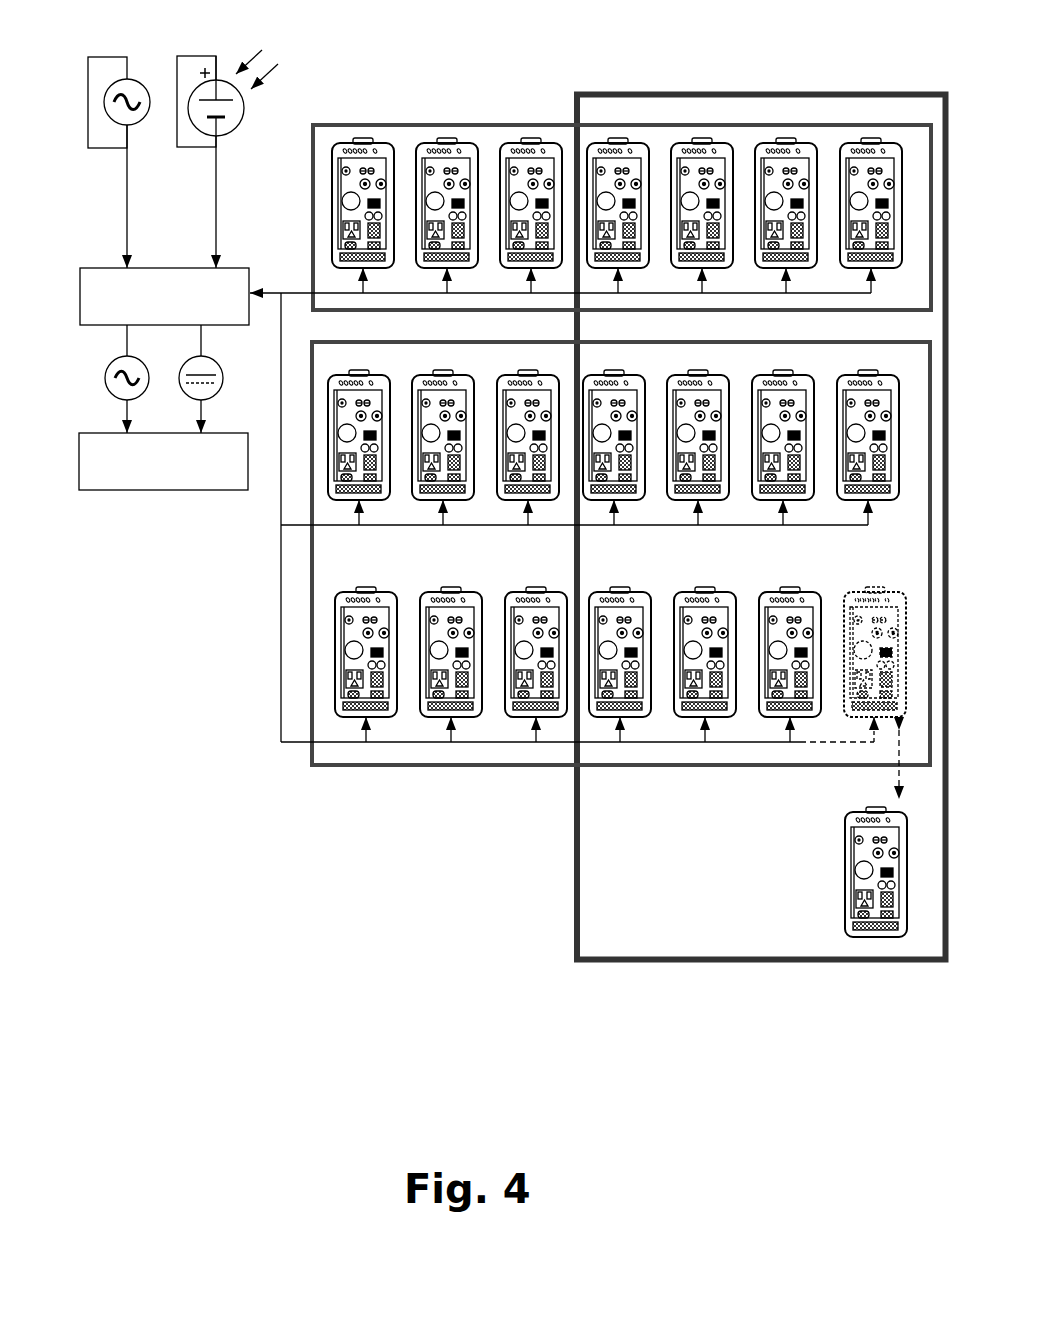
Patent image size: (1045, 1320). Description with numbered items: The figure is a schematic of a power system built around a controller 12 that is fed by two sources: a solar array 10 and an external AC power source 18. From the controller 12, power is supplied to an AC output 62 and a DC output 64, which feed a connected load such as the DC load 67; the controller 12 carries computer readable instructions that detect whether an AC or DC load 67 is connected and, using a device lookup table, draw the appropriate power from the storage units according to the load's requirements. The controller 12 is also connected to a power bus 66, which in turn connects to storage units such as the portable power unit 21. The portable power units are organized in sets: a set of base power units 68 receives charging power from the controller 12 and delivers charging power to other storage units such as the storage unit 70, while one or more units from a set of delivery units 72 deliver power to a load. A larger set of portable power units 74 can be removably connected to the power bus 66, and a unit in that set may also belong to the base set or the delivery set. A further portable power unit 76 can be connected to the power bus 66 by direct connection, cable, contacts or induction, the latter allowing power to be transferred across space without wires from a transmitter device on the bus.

The solar array 10 is at (177, 78).
The controller 12 is at (80, 283).
The external AC power source 18 is at (88, 110).
The portable power unit 21 is at (345, 143).
The AC output 62 is at (105, 380).
The DC output 64 is at (179, 378).
The power bus 66 is at (281, 293).
The DC load 67 is at (79, 453).
The set of base power units 68 is at (313, 160).
The storage unit 70 is at (355, 376).
The set of delivery units 72 is at (310, 566).
The set of portable power units 74 is at (575, 885).
The portable power unit 76 is at (845, 875).